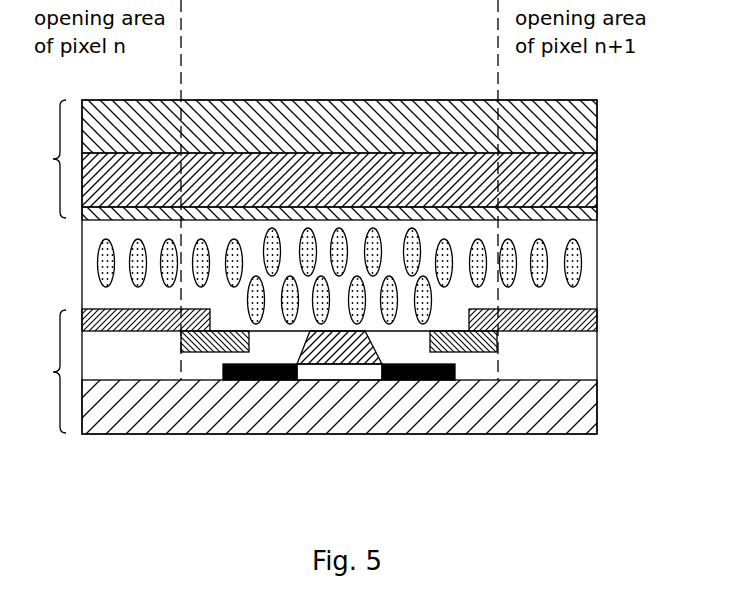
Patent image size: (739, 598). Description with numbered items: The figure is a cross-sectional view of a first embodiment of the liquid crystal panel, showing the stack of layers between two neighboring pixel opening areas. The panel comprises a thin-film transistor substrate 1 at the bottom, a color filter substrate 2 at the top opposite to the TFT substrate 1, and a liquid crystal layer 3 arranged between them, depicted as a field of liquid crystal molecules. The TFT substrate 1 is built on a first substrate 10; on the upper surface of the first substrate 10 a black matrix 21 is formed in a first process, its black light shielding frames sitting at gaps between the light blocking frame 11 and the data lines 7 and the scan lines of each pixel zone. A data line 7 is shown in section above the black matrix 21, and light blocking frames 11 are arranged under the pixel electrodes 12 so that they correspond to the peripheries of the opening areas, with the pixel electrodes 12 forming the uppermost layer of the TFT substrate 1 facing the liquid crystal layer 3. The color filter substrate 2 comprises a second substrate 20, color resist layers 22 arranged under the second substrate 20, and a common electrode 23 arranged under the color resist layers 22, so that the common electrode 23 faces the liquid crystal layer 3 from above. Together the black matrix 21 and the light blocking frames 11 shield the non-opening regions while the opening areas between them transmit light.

The thin-film transistor substrate 1 is at (49, 371).
The color filter substrate 2 is at (50, 159).
The liquid crystal layer 3 is at (103, 263).
The data line 7 is at (343, 357).
The first substrate 10 is at (575, 410).
The light blocking frame 11 is at (495, 345).
The pixel electrode 12 is at (590, 319).
The second substrate 20 is at (583, 133).
The black matrix 21 is at (252, 380).
The color resist layer 22 is at (585, 190).
The common electrode 23 is at (590, 214).